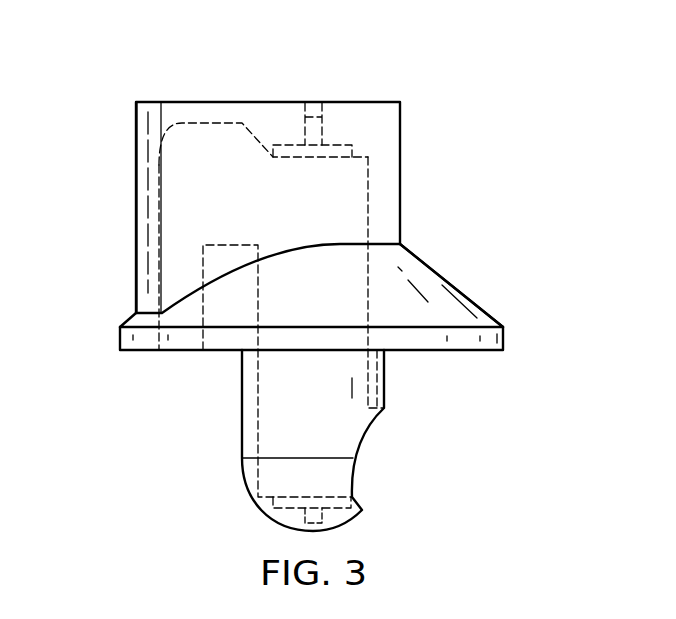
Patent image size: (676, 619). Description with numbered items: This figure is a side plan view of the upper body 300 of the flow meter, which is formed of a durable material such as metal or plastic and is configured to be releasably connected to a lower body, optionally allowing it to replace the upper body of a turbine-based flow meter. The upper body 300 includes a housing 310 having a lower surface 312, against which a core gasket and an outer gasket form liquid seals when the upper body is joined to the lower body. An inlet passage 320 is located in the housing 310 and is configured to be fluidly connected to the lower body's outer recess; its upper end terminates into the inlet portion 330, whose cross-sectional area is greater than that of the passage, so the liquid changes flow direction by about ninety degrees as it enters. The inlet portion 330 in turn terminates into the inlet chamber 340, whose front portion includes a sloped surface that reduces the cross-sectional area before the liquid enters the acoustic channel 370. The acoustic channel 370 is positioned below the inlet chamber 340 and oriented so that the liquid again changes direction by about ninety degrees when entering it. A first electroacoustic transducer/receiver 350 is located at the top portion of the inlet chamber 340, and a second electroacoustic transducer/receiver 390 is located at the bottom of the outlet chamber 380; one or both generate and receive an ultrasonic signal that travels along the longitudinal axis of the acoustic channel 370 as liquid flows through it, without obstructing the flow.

The upper body 300 is at (470, 88).
The housing 310 is at (143, 207).
The lower surface 312 is at (460, 352).
The inlet passage 320 is at (205, 318).
The inlet portion 330 is at (215, 128).
The inlet chamber 340 is at (360, 197).
The first electroacoustic transducer/receiver 350 is at (332, 152).
The acoustic channel 370 is at (360, 290).
The outlet chamber 380 is at (267, 445).
The second electroacoustic transducer/receiver 390 is at (270, 503).